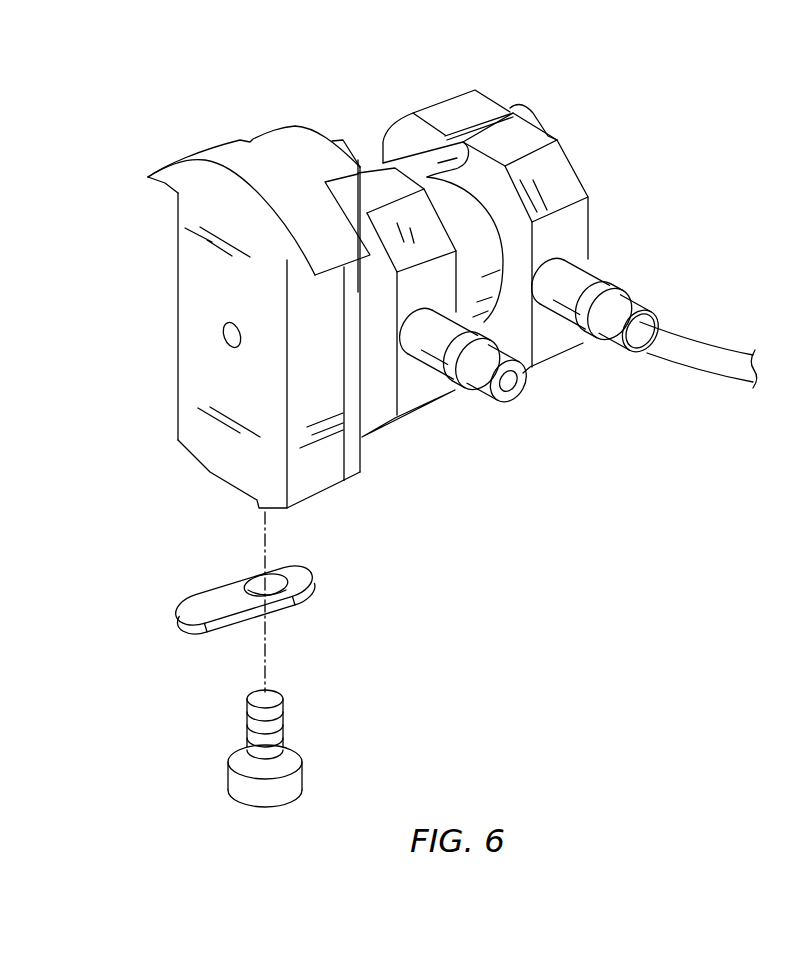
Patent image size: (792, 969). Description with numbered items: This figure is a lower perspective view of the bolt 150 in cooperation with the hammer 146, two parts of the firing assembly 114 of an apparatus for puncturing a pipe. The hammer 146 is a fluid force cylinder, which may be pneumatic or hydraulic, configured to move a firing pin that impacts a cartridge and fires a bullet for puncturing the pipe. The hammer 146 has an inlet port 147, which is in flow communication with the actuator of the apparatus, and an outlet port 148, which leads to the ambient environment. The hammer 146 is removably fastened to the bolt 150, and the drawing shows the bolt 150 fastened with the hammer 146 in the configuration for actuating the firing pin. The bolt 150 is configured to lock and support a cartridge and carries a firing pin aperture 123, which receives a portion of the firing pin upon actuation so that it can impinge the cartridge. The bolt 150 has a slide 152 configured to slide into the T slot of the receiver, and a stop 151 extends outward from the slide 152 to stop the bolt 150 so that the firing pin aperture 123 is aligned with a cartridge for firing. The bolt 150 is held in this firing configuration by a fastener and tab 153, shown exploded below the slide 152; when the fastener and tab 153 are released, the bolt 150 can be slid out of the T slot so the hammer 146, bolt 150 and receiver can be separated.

The firing assembly 114 is at (468, 92).
The firing pin aperture 123 is at (227, 343).
The hammer 146 is at (573, 225).
The inlet port 147 is at (588, 342).
The outlet port 148 is at (457, 392).
The bolt 150 is at (218, 160).
The stop 151 is at (175, 178).
The slide 152 is at (240, 465).
The fastener and tab 153 is at (155, 632).